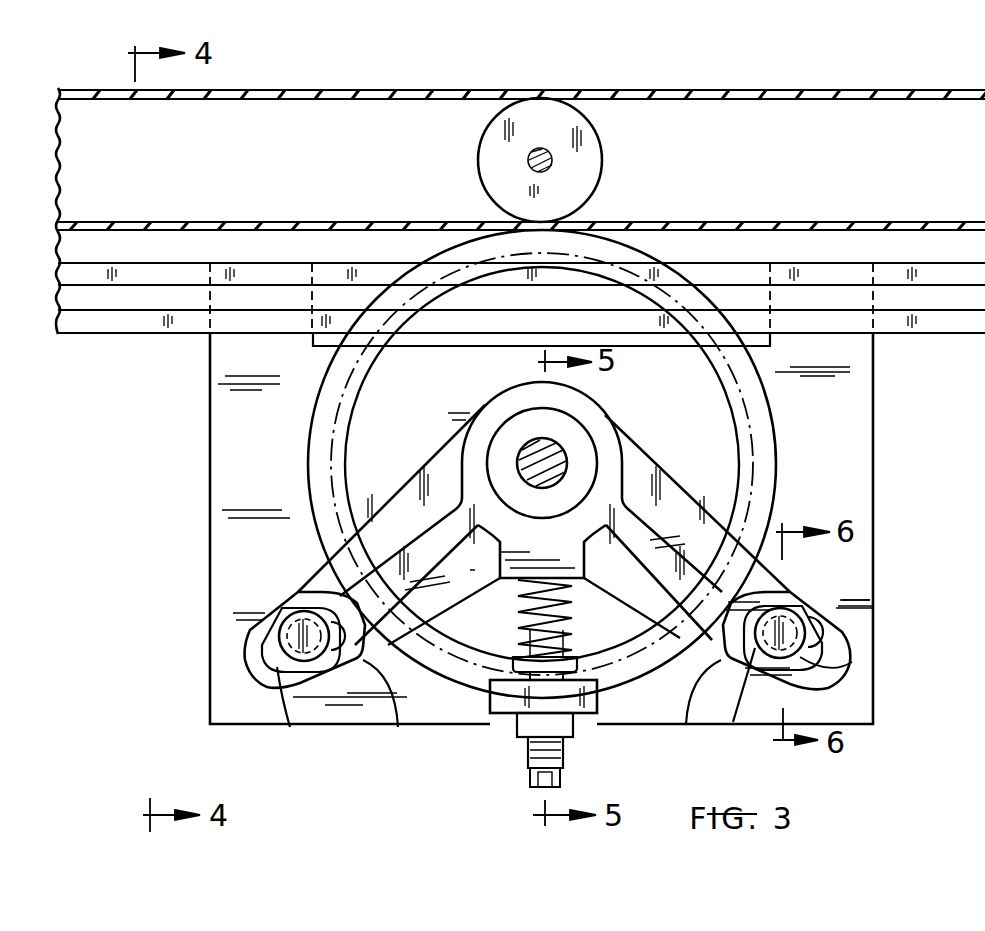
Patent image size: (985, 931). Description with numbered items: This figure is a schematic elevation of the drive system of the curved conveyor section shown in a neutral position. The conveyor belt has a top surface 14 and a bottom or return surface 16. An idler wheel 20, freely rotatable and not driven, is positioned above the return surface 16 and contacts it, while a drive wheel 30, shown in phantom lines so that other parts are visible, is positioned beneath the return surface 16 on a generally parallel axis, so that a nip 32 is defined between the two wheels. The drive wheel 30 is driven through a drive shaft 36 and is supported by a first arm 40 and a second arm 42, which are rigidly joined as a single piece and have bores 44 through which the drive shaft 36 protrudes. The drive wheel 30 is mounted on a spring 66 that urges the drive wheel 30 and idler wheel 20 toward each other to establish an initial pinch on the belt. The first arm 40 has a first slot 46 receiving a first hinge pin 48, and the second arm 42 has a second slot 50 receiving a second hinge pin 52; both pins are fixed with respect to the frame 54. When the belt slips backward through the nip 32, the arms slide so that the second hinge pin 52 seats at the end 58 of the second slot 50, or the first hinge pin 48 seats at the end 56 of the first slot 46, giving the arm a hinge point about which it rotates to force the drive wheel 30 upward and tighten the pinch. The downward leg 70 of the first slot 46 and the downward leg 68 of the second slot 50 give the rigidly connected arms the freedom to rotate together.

The top surface 14 is at (780, 88).
The return surface 16 is at (808, 220).
The idler wheel 20 is at (600, 138).
The nip 32 is at (573, 217).
The drive wheel 30 is at (777, 428).
The frame 54 is at (873, 435).
The bores 44 is at (527, 452).
The drive shaft 36 is at (567, 450).
The first arm 40 is at (403, 480).
The second arm 42 is at (718, 516).
The first hinge pin 48 is at (298, 592).
The first slot 46 is at (258, 658).
The downward leg 70 is at (293, 715).
The end 56 is at (389, 711).
The spring 66 is at (576, 622).
The second hinge pin 52 is at (797, 612).
The second slot 50 is at (822, 632).
The downward leg 68 is at (852, 662).
The end 58 is at (720, 704).